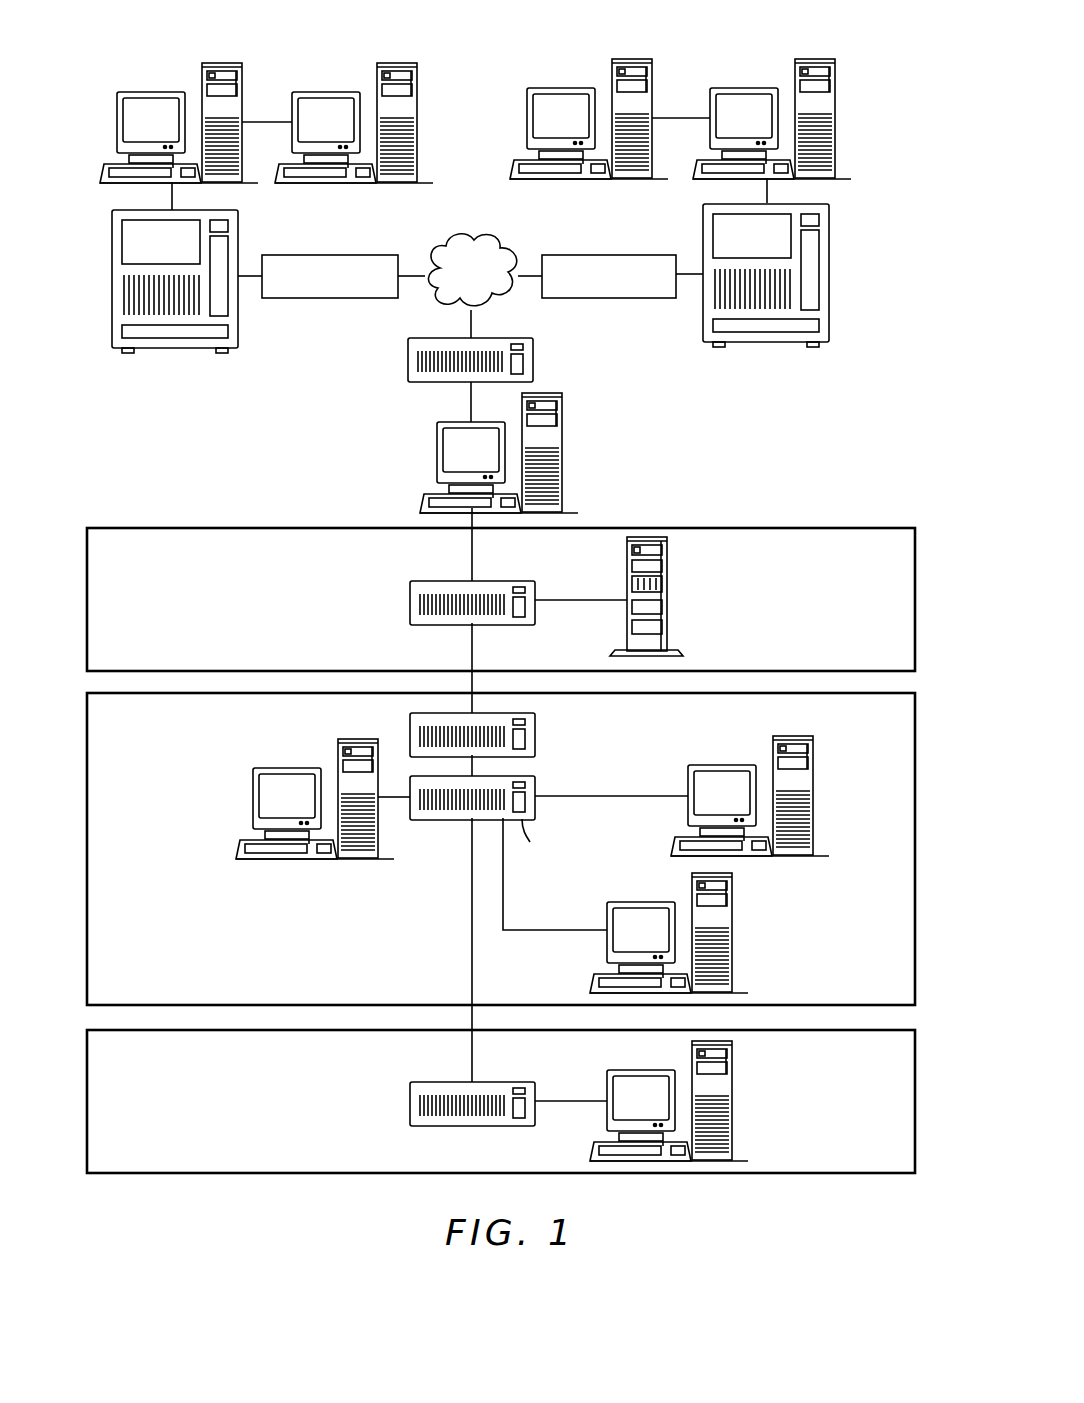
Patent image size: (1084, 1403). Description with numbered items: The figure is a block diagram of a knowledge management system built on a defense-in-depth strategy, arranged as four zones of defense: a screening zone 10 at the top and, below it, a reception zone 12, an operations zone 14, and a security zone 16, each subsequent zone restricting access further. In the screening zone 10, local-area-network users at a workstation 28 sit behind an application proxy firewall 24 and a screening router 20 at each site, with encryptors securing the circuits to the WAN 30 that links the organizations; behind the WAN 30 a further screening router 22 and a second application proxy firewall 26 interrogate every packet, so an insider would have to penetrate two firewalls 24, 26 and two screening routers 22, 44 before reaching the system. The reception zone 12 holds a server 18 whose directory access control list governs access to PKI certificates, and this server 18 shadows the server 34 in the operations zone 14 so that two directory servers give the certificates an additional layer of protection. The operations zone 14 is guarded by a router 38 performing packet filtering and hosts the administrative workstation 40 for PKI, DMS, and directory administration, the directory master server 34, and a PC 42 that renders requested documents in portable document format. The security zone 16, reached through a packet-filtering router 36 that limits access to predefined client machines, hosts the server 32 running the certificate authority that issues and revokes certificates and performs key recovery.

The screening zone 10 is at (696, 476).
The reception zone 12 is at (168, 644).
The operations zone 14 is at (168, 894).
The security zone 16 is at (168, 1152).
The server 18 is at (627, 618).
The screening router 20 is at (172, 348).
The screening router 22 is at (536, 358).
The application proxy firewall 24 is at (762, 73).
The application proxy firewall 26 is at (437, 448).
The workstation 28 is at (576, 73).
The WAN 30 is at (487, 240).
The server 32 is at (607, 1110).
The server 34 is at (723, 765).
The router 36 is at (410, 1102).
The router 38 is at (536, 738).
The workstation 40 is at (287, 768).
The PC 42 is at (640, 901).
The screening router 44 is at (410, 603).